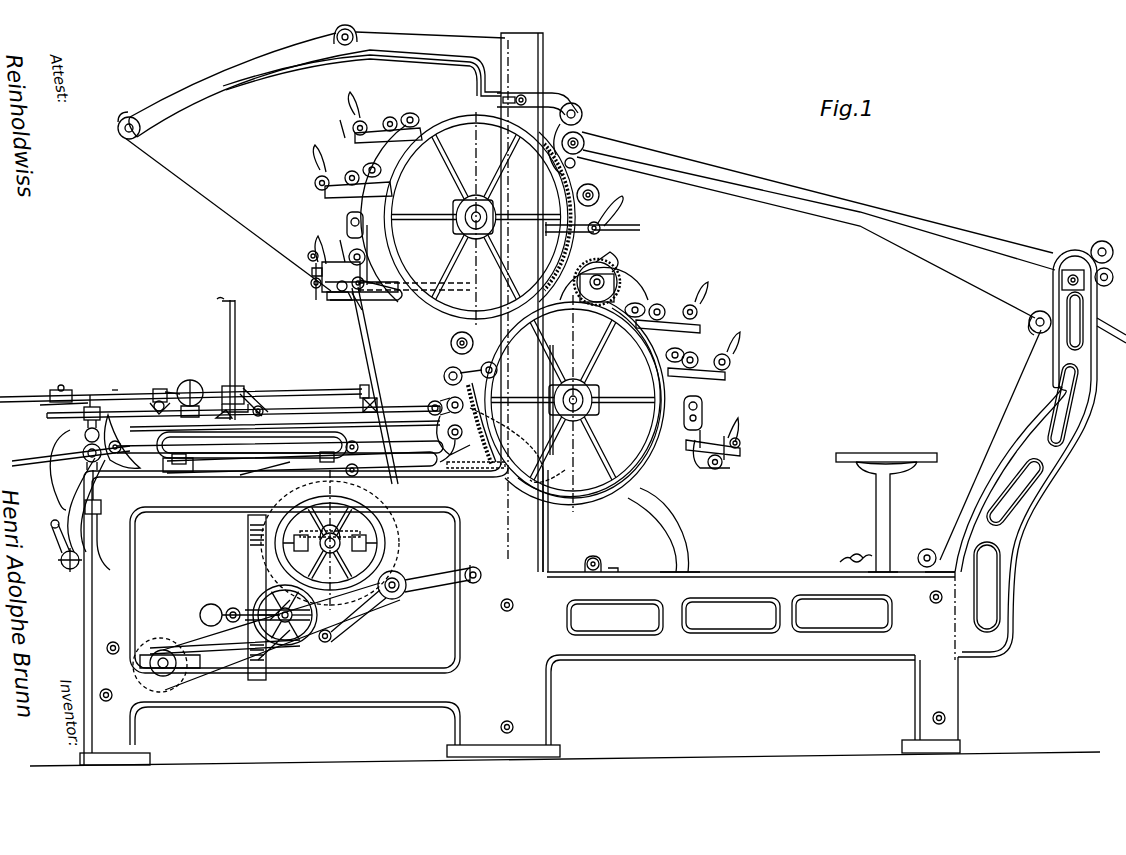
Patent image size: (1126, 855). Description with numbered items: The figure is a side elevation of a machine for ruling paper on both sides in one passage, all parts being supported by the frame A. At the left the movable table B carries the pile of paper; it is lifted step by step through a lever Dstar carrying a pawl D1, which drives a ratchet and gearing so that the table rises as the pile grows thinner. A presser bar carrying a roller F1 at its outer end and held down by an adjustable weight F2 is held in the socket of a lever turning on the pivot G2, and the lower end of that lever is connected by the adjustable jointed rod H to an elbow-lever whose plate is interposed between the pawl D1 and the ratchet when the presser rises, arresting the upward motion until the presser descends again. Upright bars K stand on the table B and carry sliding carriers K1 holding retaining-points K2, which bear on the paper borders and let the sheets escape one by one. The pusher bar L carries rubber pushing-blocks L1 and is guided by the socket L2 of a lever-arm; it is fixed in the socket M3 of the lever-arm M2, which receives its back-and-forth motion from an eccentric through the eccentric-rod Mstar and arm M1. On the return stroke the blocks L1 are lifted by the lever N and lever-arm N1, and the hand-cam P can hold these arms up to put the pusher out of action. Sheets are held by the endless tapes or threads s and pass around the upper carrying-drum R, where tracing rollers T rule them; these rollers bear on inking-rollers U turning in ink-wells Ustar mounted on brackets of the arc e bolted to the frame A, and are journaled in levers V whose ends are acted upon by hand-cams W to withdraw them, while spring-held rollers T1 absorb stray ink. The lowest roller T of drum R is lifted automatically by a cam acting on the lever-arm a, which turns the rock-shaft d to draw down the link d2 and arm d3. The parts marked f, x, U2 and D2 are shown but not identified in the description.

The frame A is at (520, 399).
The movable table B is at (243, 435).
The carrying-drum R is at (479, 218).
The arc e is at (530, 348).
The endless tapes or threads s is at (586, 292).
The lever f is at (1097, 320).
The lever-arm a is at (375, 385).
The rock-shaft d is at (350, 292).
The link d2 is at (312, 270).
The arm d3 is at (252, 568).
The upright bars K is at (236, 316).
The carriers K1 is at (240, 392).
The retaining-points K2 is at (262, 396).
The bar L is at (184, 388).
The pushing-blocks L1 is at (382, 406).
The socket L2 is at (160, 390).
The roller F1 is at (266, 407).
The weight F2 is at (184, 398).
The hand-cam P is at (115, 418).
The arm M1 is at (62, 544).
The lever-arm M2 is at (71, 461).
The socket M3 is at (60, 390).
The eccentric-rod Mstar is at (130, 520).
The lever N is at (280, 455).
The lever-arm N1 is at (123, 442).
The pivot G2 is at (84, 435).
The tube x is at (352, 478).
The tracing disks or rollers T is at (537, 253).
The spring-held rollers T1 is at (528, 261).
The inking-rollers U is at (528, 281).
The ink-wells Ustar is at (732, 428).
The roller U2 is at (318, 255).
The levers V is at (714, 416).
The hand-cams W is at (740, 448).
The lever Dstar is at (200, 612).
The pawl D1 is at (233, 608).
The pulley D2 is at (396, 575).
The jointed rod H is at (266, 637).